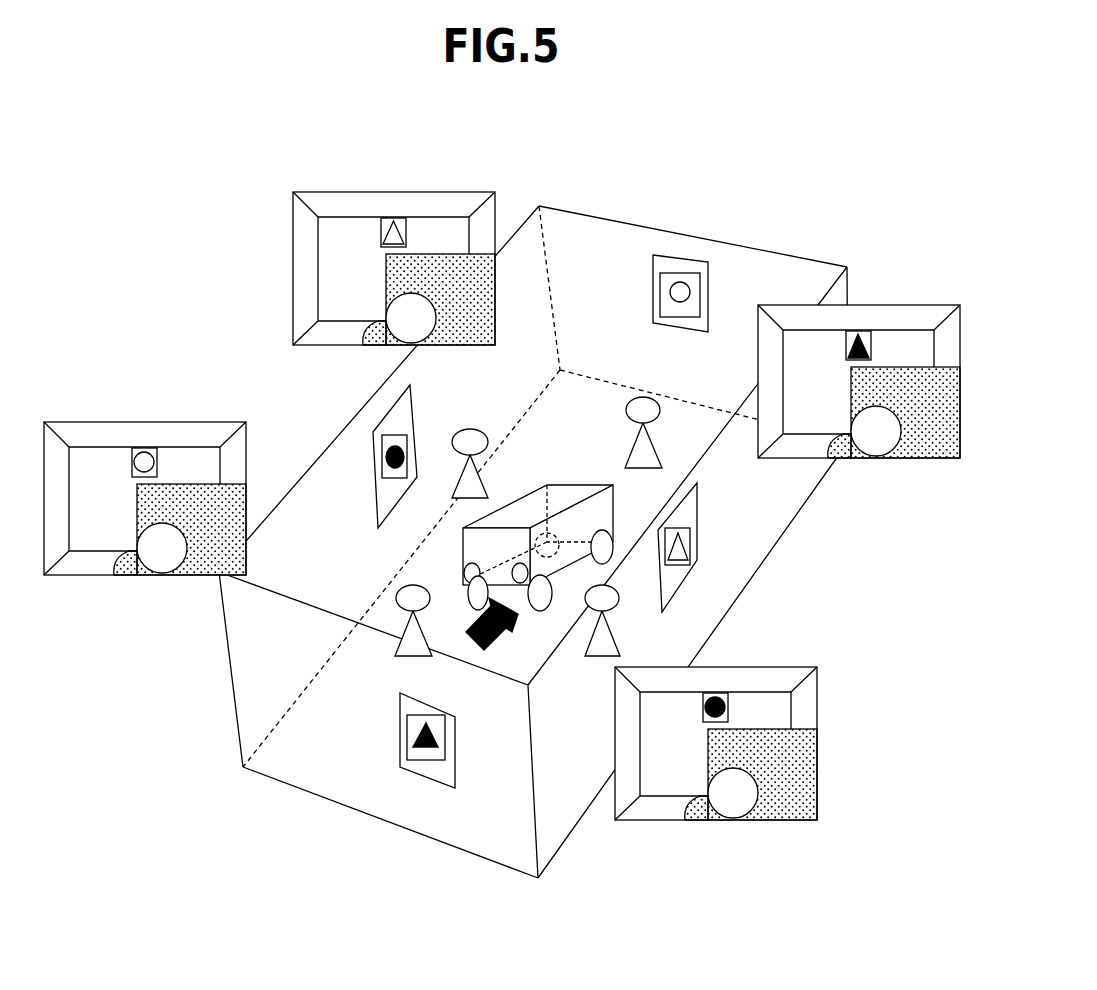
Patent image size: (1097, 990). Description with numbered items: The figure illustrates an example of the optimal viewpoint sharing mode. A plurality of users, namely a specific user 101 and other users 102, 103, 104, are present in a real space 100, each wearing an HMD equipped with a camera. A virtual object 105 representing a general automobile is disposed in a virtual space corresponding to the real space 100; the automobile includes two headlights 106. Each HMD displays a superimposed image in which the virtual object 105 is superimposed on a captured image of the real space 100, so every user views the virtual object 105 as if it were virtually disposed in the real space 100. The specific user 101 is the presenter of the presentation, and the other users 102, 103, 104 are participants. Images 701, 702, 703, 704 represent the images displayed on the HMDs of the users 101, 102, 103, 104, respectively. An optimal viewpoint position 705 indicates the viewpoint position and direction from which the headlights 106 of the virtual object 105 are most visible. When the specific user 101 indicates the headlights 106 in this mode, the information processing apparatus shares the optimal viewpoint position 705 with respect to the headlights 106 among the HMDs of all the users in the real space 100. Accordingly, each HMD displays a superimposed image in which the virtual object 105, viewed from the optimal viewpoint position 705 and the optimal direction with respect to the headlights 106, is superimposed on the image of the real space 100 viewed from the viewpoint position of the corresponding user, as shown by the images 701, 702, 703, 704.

The real space 100 is at (688, 236).
The specific user 101 is at (396, 597).
The user 102 is at (470, 429).
The user 103 is at (651, 398).
The user 104 is at (620, 603).
The virtual object 105 is at (531, 505).
The headlights 106 is at (522, 585).
The image 701 is at (155, 421).
The image 702 is at (403, 192).
The image 703 is at (910, 305).
The image 704 is at (773, 667).
The optimal viewpoint position 705 is at (491, 648).